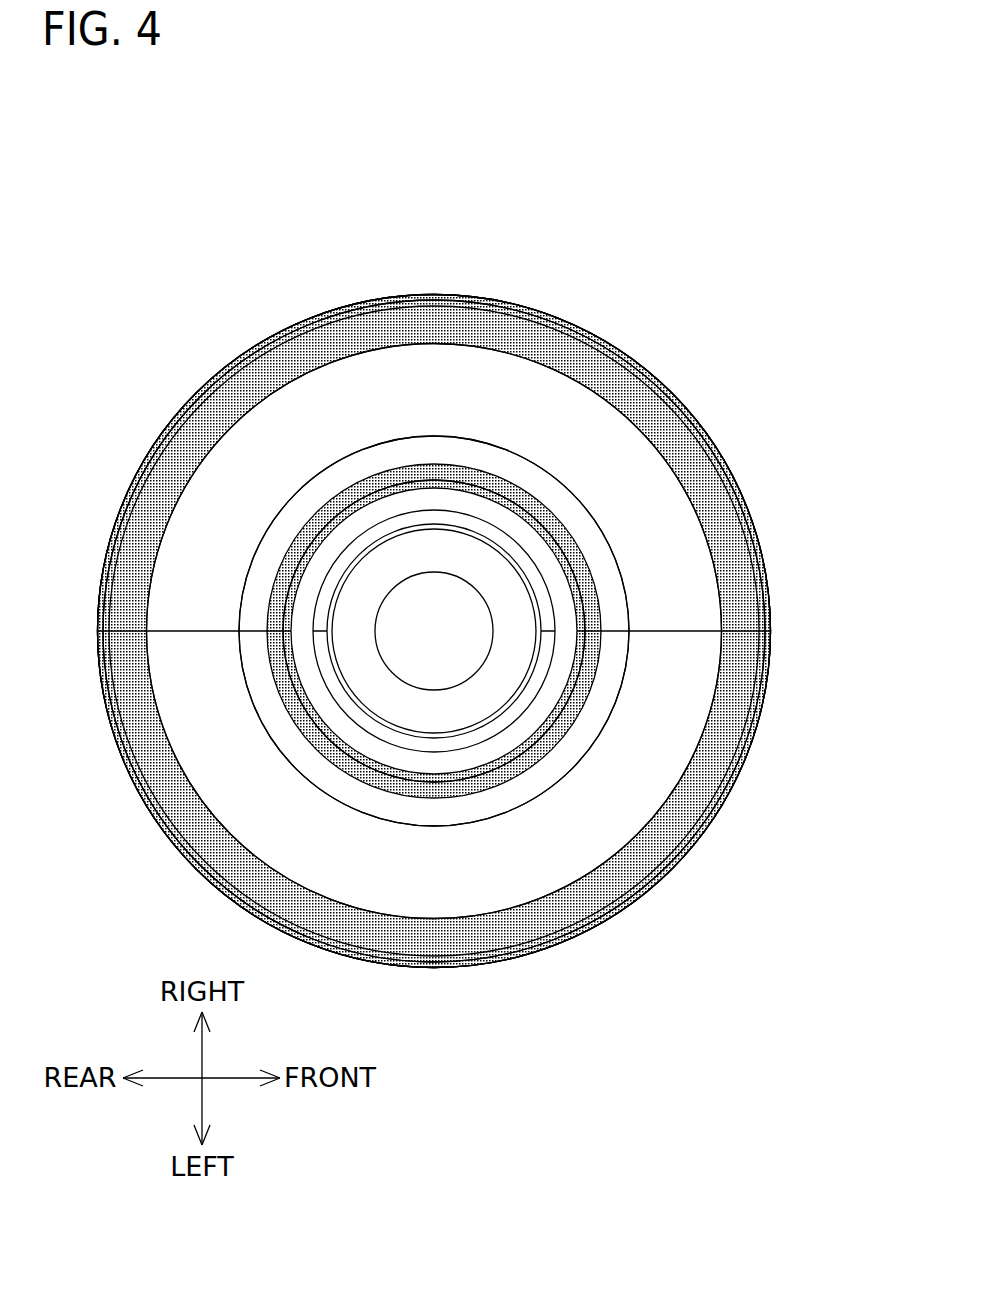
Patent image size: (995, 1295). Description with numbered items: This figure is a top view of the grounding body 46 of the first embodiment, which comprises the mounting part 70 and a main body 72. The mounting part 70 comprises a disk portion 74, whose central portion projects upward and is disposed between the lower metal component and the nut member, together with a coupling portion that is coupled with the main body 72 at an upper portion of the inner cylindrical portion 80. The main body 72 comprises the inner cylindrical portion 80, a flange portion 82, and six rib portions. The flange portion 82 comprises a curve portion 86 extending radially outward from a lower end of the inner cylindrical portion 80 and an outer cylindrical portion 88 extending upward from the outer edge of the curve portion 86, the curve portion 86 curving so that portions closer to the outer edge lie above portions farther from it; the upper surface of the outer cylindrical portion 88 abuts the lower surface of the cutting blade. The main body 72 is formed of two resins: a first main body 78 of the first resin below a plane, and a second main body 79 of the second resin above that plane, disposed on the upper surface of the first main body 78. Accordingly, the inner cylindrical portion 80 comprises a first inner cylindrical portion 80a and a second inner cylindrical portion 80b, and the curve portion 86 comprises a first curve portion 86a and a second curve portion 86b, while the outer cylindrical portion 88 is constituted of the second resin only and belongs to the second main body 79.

The grounding body 46 is at (708, 182).
The mounting part 70 is at (415, 458).
The main body 72 is at (692, 375).
The disk portion 74 is at (442, 452).
The first main body 78 is at (690, 872).
The second main body 79 is at (585, 838).
The inner cylindrical portion 80 is at (420, 1025).
The first inner cylindrical portion 80a is at (402, 810).
The second inner cylindrical portion 80b is at (448, 778).
The flange portion 82 is at (113, 508).
The curve portion 86 is at (278, 280).
The first curve portion 86a is at (255, 440).
The second curve portion 86b is at (270, 370).
The outer cylindrical portion 88 is at (147, 462).